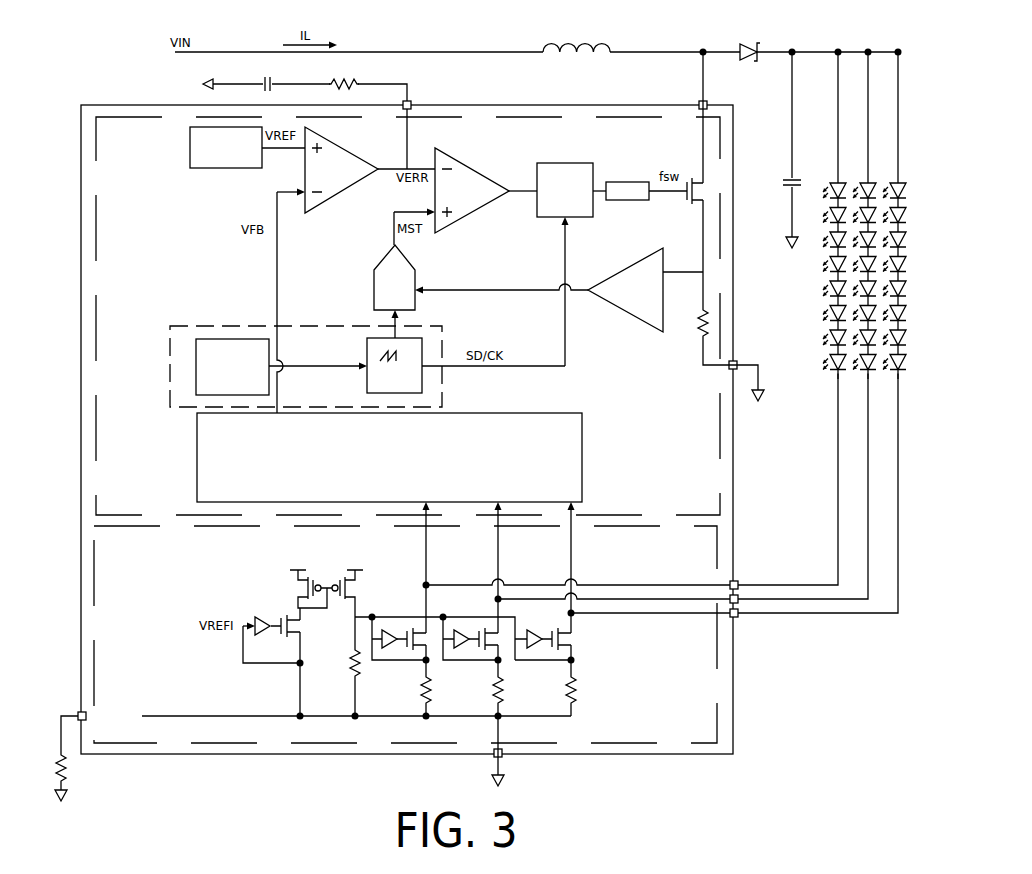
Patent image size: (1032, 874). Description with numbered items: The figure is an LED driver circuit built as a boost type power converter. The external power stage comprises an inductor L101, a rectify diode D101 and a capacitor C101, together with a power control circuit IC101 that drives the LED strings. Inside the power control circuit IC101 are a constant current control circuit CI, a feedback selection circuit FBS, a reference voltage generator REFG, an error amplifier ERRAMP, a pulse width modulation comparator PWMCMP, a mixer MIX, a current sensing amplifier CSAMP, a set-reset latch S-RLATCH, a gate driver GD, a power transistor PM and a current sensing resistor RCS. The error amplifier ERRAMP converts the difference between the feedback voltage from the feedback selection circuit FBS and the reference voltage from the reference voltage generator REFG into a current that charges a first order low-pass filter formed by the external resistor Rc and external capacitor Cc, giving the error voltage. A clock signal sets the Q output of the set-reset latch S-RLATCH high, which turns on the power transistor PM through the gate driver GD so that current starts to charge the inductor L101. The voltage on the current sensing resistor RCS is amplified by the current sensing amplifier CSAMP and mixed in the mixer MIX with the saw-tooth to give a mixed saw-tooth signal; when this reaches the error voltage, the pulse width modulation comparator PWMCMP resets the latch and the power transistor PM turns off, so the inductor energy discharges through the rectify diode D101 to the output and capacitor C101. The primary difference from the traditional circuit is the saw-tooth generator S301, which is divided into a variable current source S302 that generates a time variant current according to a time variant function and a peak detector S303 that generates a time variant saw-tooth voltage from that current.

The inductor L101 is at (576, 41).
The rectify diode D101 is at (749, 42).
The capacitor C101 is at (776, 150).
The power control circuit IC101 is at (740, 716).
The constant current control circuit CI is at (93, 567).
The external capacitor Cc is at (266, 77).
The external resistor Rc is at (344, 76).
The reference voltage generator REFG is at (226, 147).
The error amplifier ERRAMP is at (352, 187).
The pulse width modulation comparator PWMCMP is at (482, 137).
The set-reset latch S-RLATCH is at (570, 162).
The gate driver GD is at (627, 191).
The power transistor PM is at (690, 201).
The current sensing resistor RCS is at (692, 323).
The current sensing amplifier CSAMP is at (616, 308).
The mixer MIX is at (372, 288).
The saw-tooth generator S301 is at (170, 397).
The variable current source S302 is at (232, 367).
The peak detector S303 is at (394, 365).
The feedback selection circuit FBS is at (582, 457).